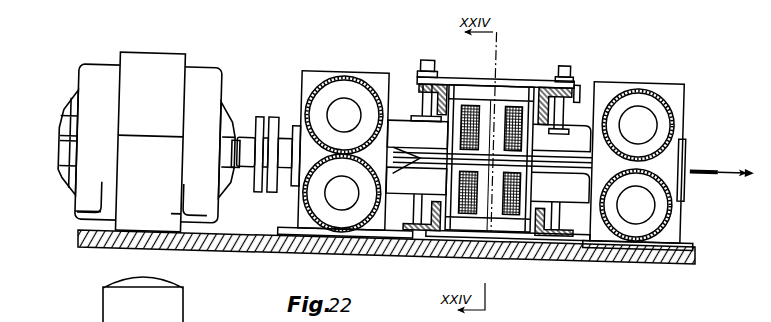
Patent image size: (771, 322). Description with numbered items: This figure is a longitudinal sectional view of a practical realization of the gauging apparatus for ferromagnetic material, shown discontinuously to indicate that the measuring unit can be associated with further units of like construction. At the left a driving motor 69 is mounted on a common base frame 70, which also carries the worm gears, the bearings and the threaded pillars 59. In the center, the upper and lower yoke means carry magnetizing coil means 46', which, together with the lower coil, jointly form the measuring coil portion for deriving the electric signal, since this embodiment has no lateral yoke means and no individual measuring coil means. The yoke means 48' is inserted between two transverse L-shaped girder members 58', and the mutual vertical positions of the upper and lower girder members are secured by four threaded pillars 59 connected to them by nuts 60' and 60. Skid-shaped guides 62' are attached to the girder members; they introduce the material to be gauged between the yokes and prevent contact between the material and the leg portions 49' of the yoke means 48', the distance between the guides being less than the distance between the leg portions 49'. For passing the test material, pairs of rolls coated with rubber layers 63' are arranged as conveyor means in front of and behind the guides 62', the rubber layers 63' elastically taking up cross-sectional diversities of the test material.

The driving motor 69 is at (205, 84).
The common base frame 70 is at (678, 255).
The rubber layer 63' is at (344, 94).
The skid-shaped guide 62' is at (417, 138).
The nut 60 is at (435, 79).
The nut 60' is at (556, 88).
The transverse L-shaped girder member 58' is at (500, 80).
The threaded pillar 59 is at (418, 213).
The magnetizing coil means 46' is at (472, 102).
The yoke means 48' is at (512, 104).
The leg portion 49' is at (515, 159).